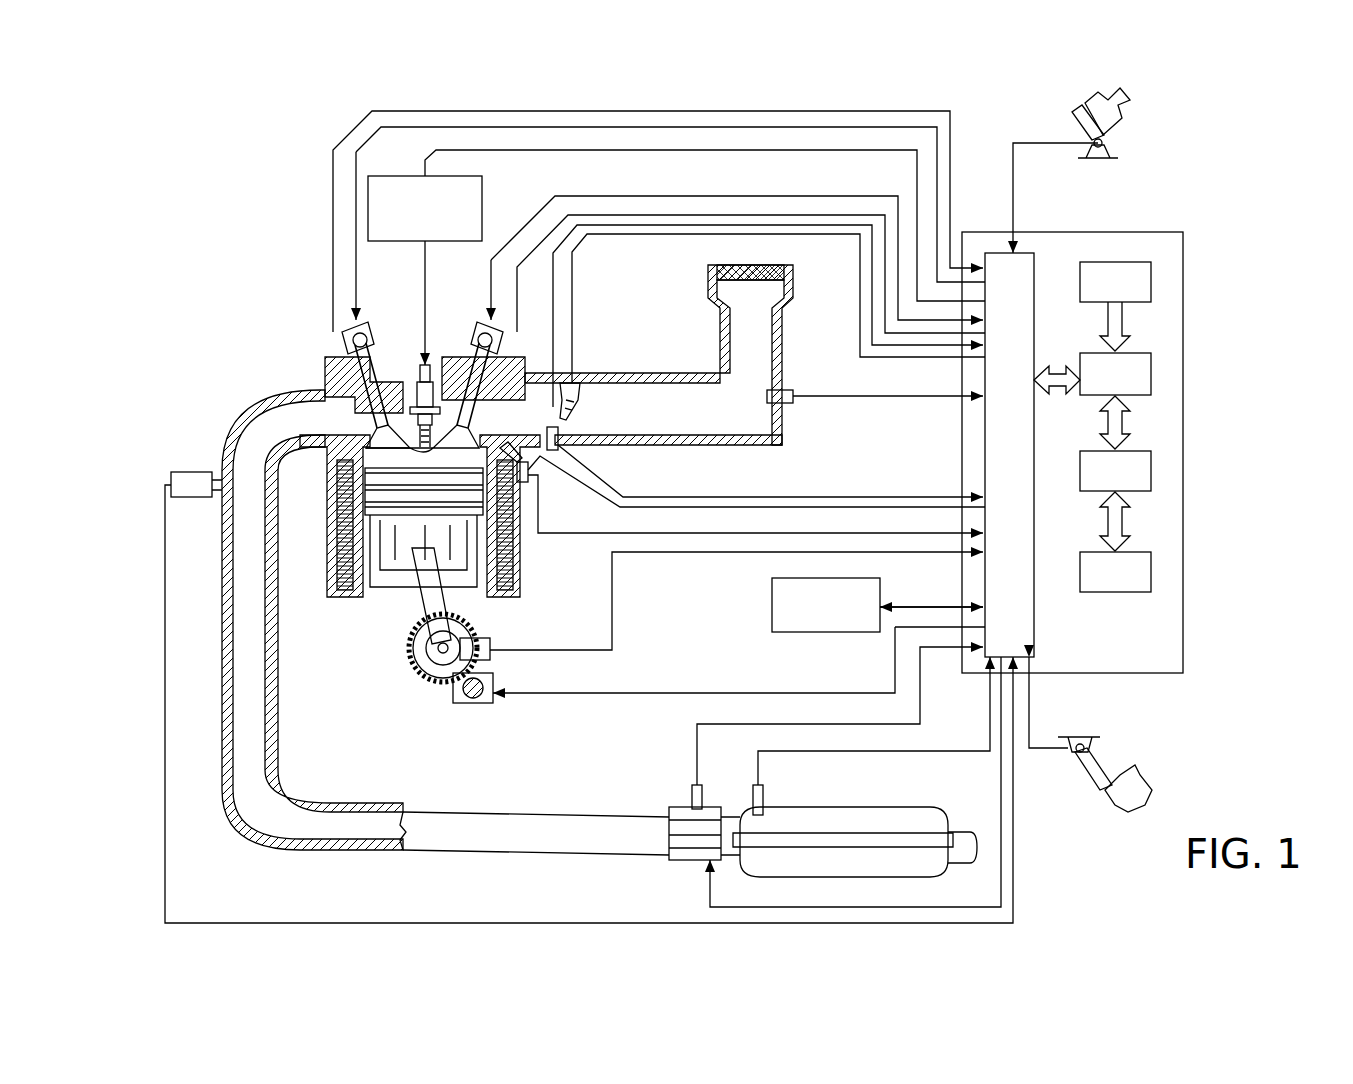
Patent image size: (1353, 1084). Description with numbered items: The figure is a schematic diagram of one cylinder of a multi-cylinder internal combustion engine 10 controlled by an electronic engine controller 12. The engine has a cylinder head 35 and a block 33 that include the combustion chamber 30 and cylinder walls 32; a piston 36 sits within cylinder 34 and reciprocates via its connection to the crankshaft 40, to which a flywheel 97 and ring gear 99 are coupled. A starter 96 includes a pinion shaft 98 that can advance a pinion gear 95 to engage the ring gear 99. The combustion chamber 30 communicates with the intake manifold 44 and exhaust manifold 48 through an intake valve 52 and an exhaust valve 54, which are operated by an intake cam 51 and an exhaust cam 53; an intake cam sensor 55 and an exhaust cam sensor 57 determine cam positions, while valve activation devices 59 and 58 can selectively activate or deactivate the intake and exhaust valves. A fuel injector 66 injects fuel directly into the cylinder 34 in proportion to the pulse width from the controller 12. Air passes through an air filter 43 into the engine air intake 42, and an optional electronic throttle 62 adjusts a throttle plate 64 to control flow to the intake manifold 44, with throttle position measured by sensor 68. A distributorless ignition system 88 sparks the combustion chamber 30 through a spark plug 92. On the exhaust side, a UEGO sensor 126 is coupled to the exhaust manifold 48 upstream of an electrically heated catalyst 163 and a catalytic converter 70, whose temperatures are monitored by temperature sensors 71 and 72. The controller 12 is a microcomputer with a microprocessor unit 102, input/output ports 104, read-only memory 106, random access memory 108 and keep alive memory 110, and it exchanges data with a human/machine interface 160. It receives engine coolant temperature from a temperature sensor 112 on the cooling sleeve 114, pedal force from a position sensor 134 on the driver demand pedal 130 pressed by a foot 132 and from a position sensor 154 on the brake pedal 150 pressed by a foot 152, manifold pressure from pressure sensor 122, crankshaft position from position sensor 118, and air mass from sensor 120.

The internal combustion engine 10 is at (265, 312).
The electronic engine controller 12 is at (1183, 232).
The combustion chamber 30 is at (420, 455).
The cylinder walls 32 is at (370, 600).
The block 33 is at (325, 490).
The cylinder 34 is at (400, 585).
The cylinder head 35 is at (322, 357).
The piston 36 is at (405, 548).
The crankshaft 40 is at (428, 658).
The engine air intake 42 is at (705, 285).
The air filter 43 is at (770, 280).
The intake manifold 44 is at (652, 409).
The exhaust manifold 48 is at (445, 622).
The intake cam 51 is at (497, 340).
The intake valve 52 is at (468, 415).
The exhaust cam 53 is at (365, 340).
The exhaust valve 54 is at (380, 422).
The intake cam sensor 55 is at (512, 355).
The exhaust cam sensor 57 is at (345, 338).
The valve activation device 58 is at (378, 340).
The valve activation device 59 is at (475, 348).
The electronic throttle 62 is at (582, 402).
The throttle plate 64 is at (574, 425).
The fuel injector 66 is at (535, 472).
The throttle position sensor 68 is at (557, 390).
The catalytic converter 70 is at (780, 805).
The temperature sensor 71 is at (702, 790).
The temperature sensor 72 is at (763, 790).
The distributorless ignition system 88 is at (385, 176).
The spark plug 92 is at (430, 365).
The pinion gear 95 is at (480, 703).
The starter 96 is at (493, 700).
The flywheel 97 is at (418, 650).
The pinion shaft 98 is at (466, 698).
The ring gear 99 is at (435, 672).
The microprocessor unit 102 is at (1151, 380).
The input/output ports 104 is at (1034, 260).
The read-only memory 106 is at (1151, 280).
The random access memory 108 is at (1151, 470).
The keep alive memory 110 is at (1151, 572).
The temperature sensor 112 is at (538, 490).
The cooling sleeve 114 is at (510, 555).
The position sensor 118 is at (490, 640).
The air mass sensor 120 is at (790, 393).
The pressure sensor 122 is at (562, 450).
The Universal Exhaust Gas Oxygen (UEGO) sensor 126 is at (171, 475).
The driver demand pedal 130 is at (1078, 122).
The foot 132 is at (1125, 105).
The position sensor 134 is at (1100, 143).
The brake pedal 150 is at (1093, 790).
The foot 152 is at (1130, 760).
The position sensor 154 is at (1068, 737).
The human/machine interface 160 is at (877, 605).
The electrically heated catalyst 163 is at (690, 855).